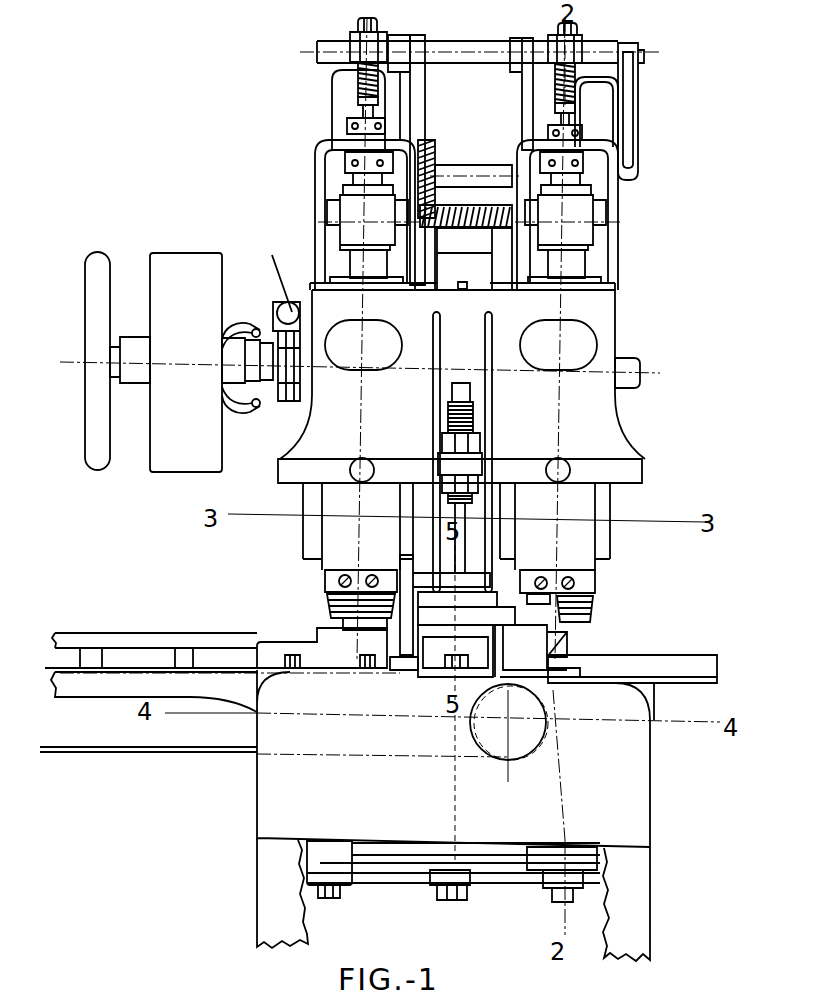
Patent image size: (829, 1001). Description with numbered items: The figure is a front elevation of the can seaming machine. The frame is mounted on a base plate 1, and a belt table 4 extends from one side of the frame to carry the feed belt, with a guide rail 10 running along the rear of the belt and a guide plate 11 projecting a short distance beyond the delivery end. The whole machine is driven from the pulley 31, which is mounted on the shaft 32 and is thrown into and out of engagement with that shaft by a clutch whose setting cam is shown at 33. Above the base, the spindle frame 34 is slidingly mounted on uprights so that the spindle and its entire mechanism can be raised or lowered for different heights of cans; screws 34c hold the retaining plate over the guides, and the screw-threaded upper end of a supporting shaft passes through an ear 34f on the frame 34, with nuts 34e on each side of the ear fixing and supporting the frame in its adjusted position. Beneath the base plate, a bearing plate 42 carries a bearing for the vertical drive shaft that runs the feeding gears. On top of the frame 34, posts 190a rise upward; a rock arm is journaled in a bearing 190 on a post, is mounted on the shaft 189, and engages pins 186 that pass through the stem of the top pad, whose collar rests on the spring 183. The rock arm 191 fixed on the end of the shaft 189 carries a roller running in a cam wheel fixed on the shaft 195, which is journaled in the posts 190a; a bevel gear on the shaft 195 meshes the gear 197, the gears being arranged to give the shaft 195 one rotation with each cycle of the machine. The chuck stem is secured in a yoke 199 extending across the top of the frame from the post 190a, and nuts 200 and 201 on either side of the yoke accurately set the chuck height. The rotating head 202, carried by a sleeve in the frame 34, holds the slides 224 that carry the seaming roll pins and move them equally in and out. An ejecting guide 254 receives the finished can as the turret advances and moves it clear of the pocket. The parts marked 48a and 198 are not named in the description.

The base plate 1 is at (634, 776).
The belt table 4 is at (120, 687).
The guide rail 10 is at (98, 643).
The guide plate 11 is at (282, 647).
The pulley 31 is at (177, 455).
The shaft 32 is at (228, 357).
The setting cam 33 is at (255, 390).
The spindle frame 34 is at (607, 312).
The nuts 34e is at (478, 440).
The ear 34f is at (472, 463).
The screws 34c is at (476, 483).
The bearing plate 42 is at (408, 860).
The spindle rod 48a is at (465, 530).
The spring 183 is at (358, 80).
The pins 186 is at (350, 50).
The shaft 189 is at (350, 48).
The bearing 190 is at (417, 40).
The post 190a is at (415, 90).
The rock arm 191 is at (638, 110).
The shaft 195 is at (487, 166).
The gear 197 is at (447, 205).
The worm 198 is at (424, 141).
The yoke 199 is at (345, 162).
The nut 200 is at (350, 128).
The nut 201 is at (585, 172).
The head 202 is at (577, 550).
The slides 224 is at (588, 584).
The ejecting guide 254 is at (700, 667).